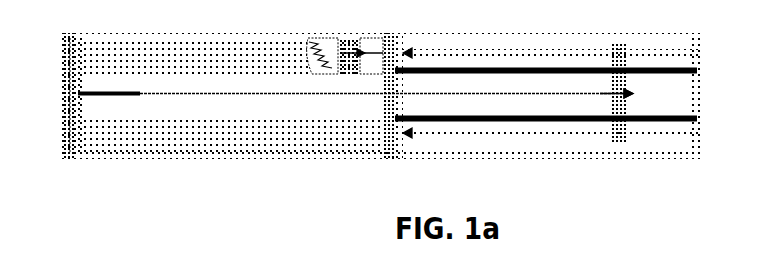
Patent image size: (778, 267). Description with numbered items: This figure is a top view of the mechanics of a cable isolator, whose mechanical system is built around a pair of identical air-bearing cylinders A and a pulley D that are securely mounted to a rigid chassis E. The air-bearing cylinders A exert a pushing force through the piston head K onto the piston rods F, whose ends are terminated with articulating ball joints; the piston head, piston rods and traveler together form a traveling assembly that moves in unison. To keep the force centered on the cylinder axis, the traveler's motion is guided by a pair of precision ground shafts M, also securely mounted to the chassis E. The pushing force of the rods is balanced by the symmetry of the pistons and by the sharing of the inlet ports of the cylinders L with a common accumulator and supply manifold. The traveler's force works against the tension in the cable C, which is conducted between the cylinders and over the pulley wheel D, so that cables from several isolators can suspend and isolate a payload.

The air-bearing cylinders A is at (228, 95).
The cable C is at (386, 94).
The pulley D is at (109, 106).
The rigid chassis E is at (398, 164).
The piston rods F is at (551, 95).
The piston head K is at (345, 56).
The inlet ports of the cylinders L is at (69, 57).
The precision ground shafts M is at (682, 73).